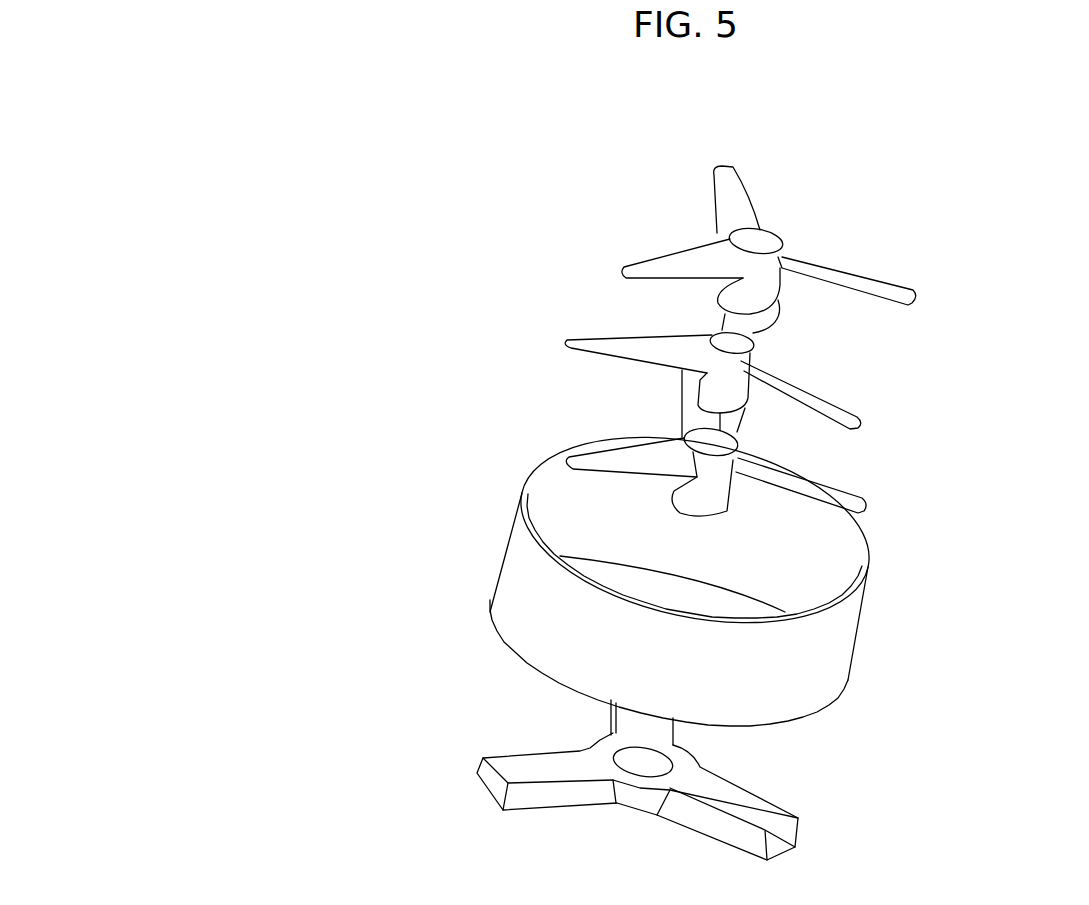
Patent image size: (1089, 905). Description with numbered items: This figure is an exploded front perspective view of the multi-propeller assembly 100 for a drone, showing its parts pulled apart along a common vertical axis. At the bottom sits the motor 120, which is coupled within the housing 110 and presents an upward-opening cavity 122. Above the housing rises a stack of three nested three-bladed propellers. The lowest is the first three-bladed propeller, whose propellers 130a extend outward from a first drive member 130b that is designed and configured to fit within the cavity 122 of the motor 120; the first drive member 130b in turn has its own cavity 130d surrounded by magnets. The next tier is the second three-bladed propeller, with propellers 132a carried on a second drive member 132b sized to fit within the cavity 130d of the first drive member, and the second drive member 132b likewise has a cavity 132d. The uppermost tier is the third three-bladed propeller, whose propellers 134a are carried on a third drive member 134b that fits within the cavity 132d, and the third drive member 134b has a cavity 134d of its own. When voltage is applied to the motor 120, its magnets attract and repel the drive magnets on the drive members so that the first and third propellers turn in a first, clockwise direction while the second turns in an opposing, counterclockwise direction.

The multi-propeller assembly 100 is at (140, 140).
The housing 110 is at (510, 550).
The motor 120 is at (497, 765).
The cavity 122 is at (657, 760).
The propellers 130a is at (583, 463).
The first drive member 130b is at (732, 510).
The cavity 130d is at (728, 441).
The propellers 132a is at (567, 341).
The second drive member 132b is at (733, 398).
The cavity 132d is at (745, 333).
The propellers 134a is at (640, 270).
The third drive member 134b is at (763, 293).
The cavity 134d is at (766, 229).